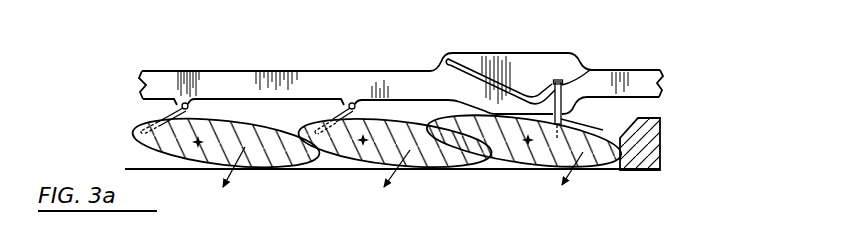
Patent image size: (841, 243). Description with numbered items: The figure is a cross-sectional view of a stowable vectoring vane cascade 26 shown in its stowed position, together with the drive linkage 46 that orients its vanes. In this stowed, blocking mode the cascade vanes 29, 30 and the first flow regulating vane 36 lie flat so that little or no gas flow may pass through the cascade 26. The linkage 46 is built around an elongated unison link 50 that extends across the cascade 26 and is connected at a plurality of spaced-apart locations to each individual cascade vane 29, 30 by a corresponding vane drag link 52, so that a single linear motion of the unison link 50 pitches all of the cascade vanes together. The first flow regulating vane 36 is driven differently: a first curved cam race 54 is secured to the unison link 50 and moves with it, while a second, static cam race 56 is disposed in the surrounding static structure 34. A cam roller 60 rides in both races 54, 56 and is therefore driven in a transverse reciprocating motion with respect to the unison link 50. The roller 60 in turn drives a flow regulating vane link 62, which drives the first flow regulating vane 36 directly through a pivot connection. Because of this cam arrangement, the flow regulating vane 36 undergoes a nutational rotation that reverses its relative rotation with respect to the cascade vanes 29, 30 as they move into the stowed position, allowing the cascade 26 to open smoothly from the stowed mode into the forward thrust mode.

The vane cascade 26 is at (580, 36).
The linkage 46 is at (352, 67).
The unison link 50 is at (247, 70).
The vane drag link 52 is at (170, 112).
The first curved cam race 54 is at (469, 57).
The second, static cam race 56 is at (556, 79).
The cam roller 60 is at (588, 70).
The flow regulating vane link 62 is at (576, 121).
The cascade vane 29 is at (276, 165).
The cascade vane 30 is at (454, 166).
The first flow regulating vane 36 is at (532, 167).
The static structure 34 is at (662, 147).